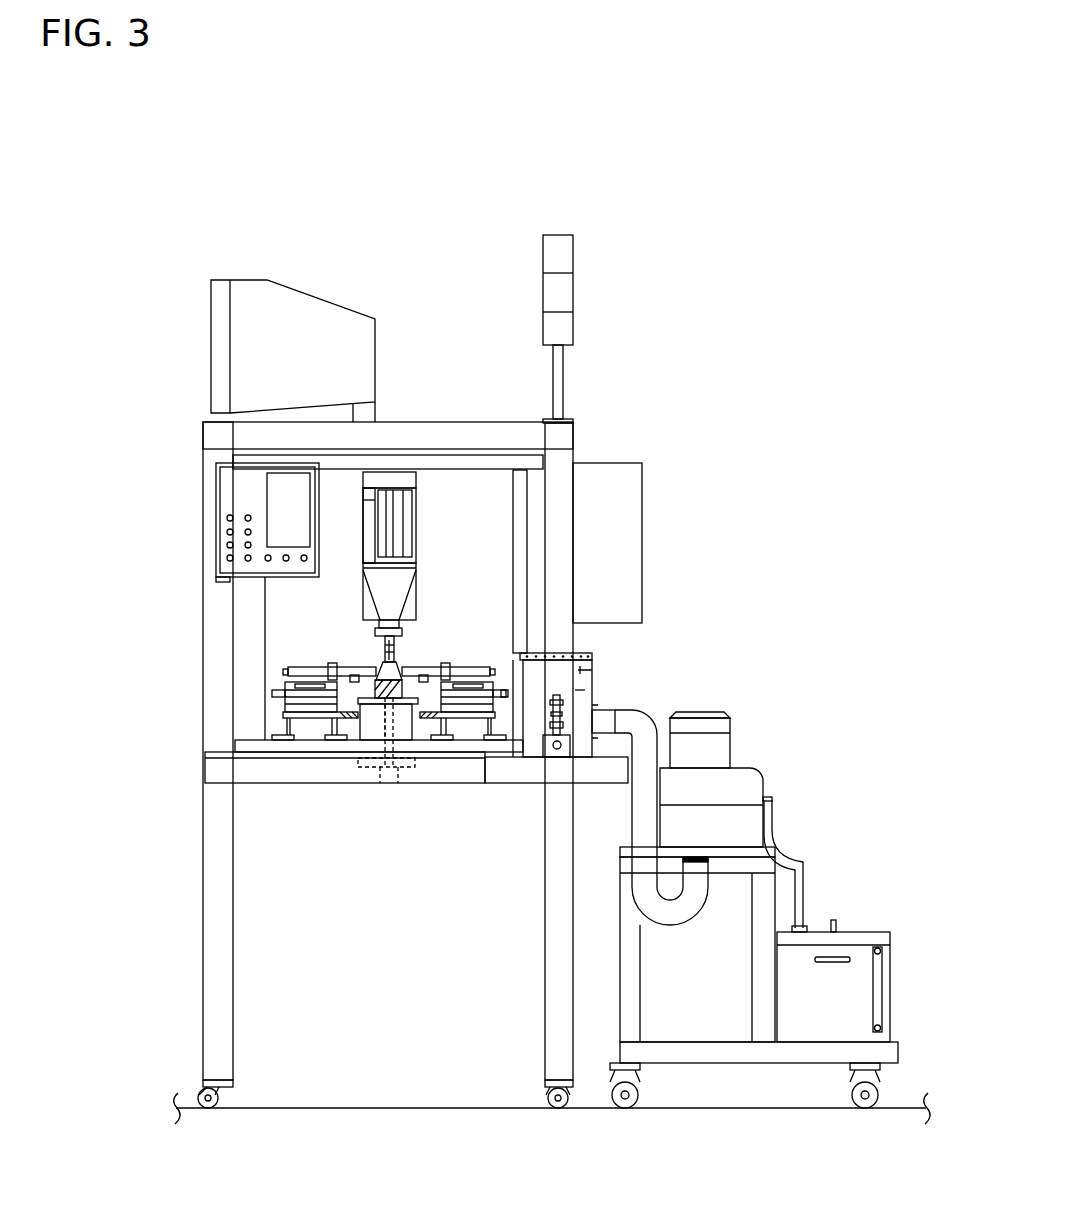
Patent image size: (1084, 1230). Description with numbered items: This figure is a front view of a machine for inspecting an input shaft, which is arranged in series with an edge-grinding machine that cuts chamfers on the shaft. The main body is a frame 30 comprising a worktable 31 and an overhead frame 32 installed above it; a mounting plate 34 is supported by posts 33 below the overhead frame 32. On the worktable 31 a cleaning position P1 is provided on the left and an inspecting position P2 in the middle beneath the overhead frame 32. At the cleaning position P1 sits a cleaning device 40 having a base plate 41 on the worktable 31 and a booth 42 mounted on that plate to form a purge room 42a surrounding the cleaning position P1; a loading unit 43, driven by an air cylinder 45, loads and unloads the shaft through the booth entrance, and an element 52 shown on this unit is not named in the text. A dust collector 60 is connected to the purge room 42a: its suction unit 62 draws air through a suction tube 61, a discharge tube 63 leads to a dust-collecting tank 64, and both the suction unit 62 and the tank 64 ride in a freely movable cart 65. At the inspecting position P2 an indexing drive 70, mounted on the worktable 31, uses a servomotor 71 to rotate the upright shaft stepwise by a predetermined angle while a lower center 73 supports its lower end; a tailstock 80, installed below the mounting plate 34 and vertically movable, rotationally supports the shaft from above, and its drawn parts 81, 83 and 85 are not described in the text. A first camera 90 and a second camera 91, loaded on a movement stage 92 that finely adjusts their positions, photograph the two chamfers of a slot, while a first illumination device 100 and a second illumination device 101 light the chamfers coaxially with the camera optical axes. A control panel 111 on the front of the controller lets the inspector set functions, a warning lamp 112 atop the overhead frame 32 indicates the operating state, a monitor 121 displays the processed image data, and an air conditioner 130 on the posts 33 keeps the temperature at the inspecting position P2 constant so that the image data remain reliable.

The frame 30 is at (200, 915).
The worktable 31 is at (215, 767).
The overhead frame 32 is at (470, 432).
The posts 33 is at (527, 522).
The mounting plate 34 is at (505, 465).
The cleaning device 40 is at (602, 651).
The base plate 41 is at (610, 783).
The booth 42 is at (593, 697).
The purge room 42a is at (583, 670).
The loading unit 43 is at (531, 753).
The air cylinder 45 is at (552, 750).
The mounting plate 52 is at (558, 653).
The dust collector 60 is at (772, 786).
The suction tube 61 is at (663, 748).
The suction unit 62 is at (718, 750).
The discharge tube 63 is at (800, 855).
The dust-collecting tank 64 is at (866, 950).
The cart 65 is at (753, 1053).
The indexing drive 70 is at (357, 747).
The servomotor 71 is at (400, 745).
The lower center 73 is at (405, 733).
The tailstock 80 is at (430, 498).
The cylinder 81 is at (418, 522).
The housing 83 is at (410, 575).
The nozzle 85 is at (376, 630).
The first camera 90 is at (318, 667).
The second camera 91 is at (460, 665).
The movement stage 92 is at (277, 688).
The first illumination device 100 is at (352, 667).
The second illumination device 101 is at (423, 663).
The control panel 111 is at (228, 495).
The warning lamp 112 is at (566, 293).
The monitor 121 is at (318, 310).
The air conditioner 130 is at (642, 482).
The cleaning position P1 is at (586, 691).
The inspecting position P2 is at (400, 650).